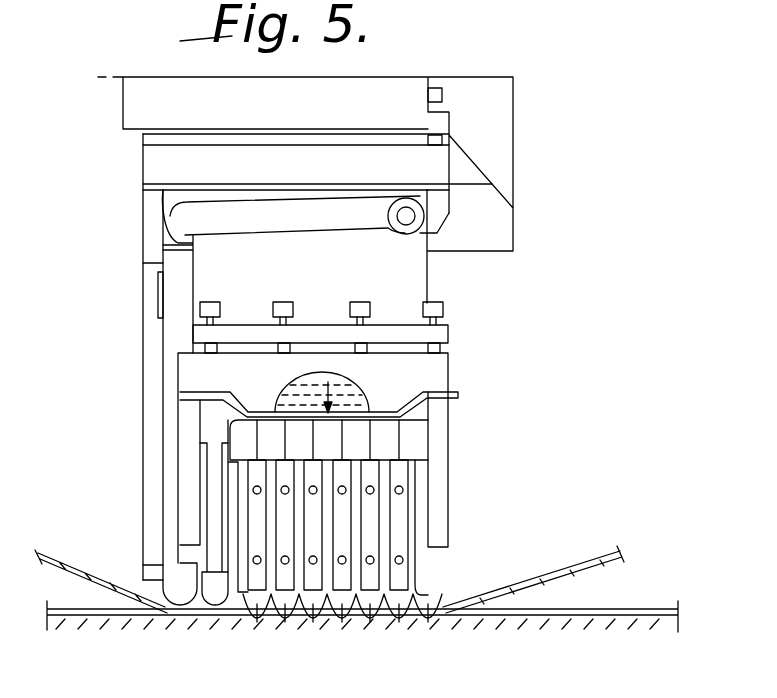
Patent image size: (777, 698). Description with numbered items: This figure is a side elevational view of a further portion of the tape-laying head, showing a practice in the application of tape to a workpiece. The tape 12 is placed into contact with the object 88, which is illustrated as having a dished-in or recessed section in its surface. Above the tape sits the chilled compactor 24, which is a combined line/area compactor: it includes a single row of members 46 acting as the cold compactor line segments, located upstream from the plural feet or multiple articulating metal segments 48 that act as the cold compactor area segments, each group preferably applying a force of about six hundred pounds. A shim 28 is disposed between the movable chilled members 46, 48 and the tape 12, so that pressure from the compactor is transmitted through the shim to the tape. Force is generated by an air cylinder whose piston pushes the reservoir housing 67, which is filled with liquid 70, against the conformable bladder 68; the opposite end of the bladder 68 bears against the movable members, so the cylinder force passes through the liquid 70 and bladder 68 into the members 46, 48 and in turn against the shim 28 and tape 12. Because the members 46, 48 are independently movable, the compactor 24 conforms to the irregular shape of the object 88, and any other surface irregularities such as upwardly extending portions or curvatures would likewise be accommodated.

The tape 12 is at (645, 608).
The chilled compactor 24 is at (495, 488).
The shim 28 is at (590, 562).
The line segment members 46 is at (182, 592).
The articulating metal segments 48 is at (220, 633).
The reservoir housing 67 is at (435, 373).
The conformable bladder 68 is at (397, 410).
The liquid 70 is at (307, 378).
The object 88 is at (633, 620).